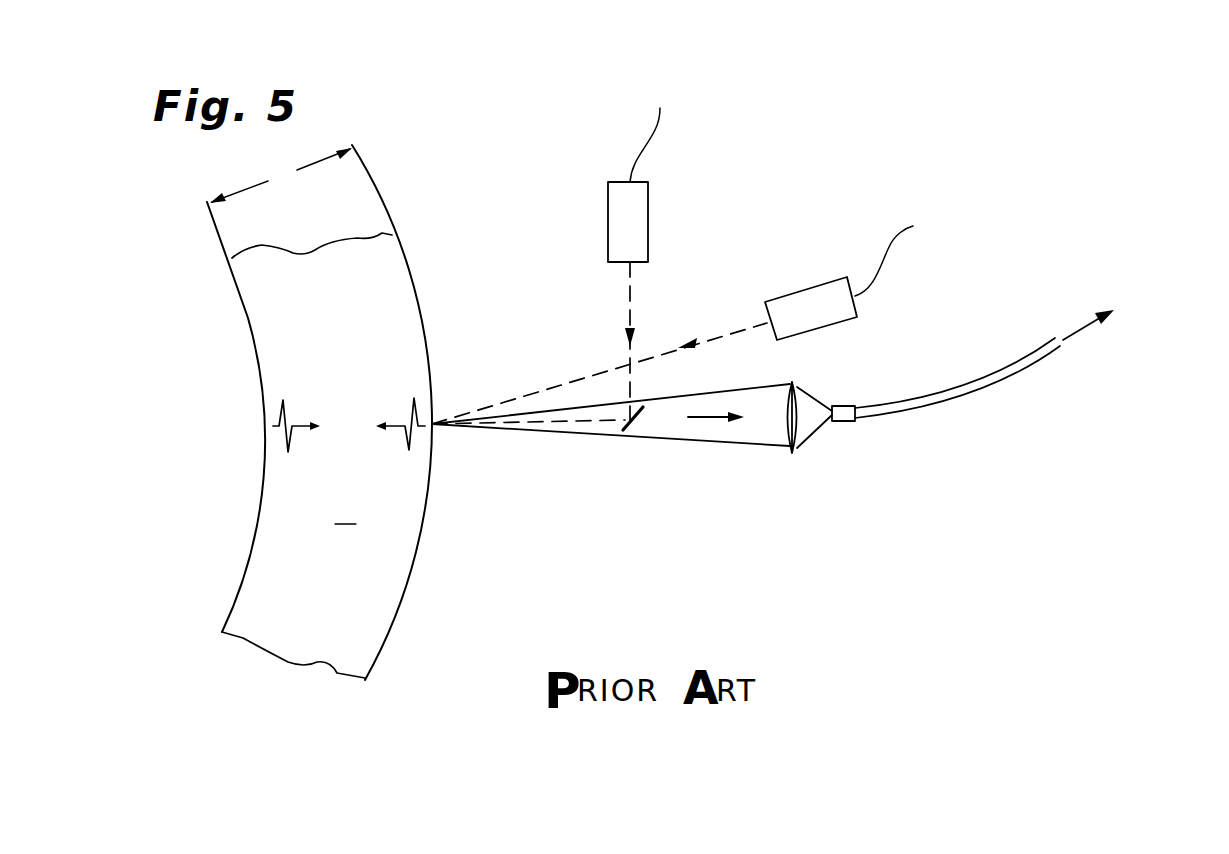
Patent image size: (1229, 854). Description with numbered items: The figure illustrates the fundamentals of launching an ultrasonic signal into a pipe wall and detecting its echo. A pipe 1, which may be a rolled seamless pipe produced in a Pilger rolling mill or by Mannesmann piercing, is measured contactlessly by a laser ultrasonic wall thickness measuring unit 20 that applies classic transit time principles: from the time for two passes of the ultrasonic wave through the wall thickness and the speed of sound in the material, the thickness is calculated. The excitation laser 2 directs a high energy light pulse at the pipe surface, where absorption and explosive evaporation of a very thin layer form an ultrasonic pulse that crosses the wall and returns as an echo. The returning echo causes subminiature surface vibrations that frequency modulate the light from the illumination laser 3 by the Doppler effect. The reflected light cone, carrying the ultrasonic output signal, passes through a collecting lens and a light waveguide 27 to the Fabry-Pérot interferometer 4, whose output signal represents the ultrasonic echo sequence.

The pipe 1 is at (385, 287).
The excitation laser 2 is at (815, 300).
The illumination laser 3 is at (617, 222).
The Fabry-Pérot interferometer 4 is at (1128, 318).
The measuring unit 20 is at (688, 546).
The light waveguide 27 is at (988, 378).